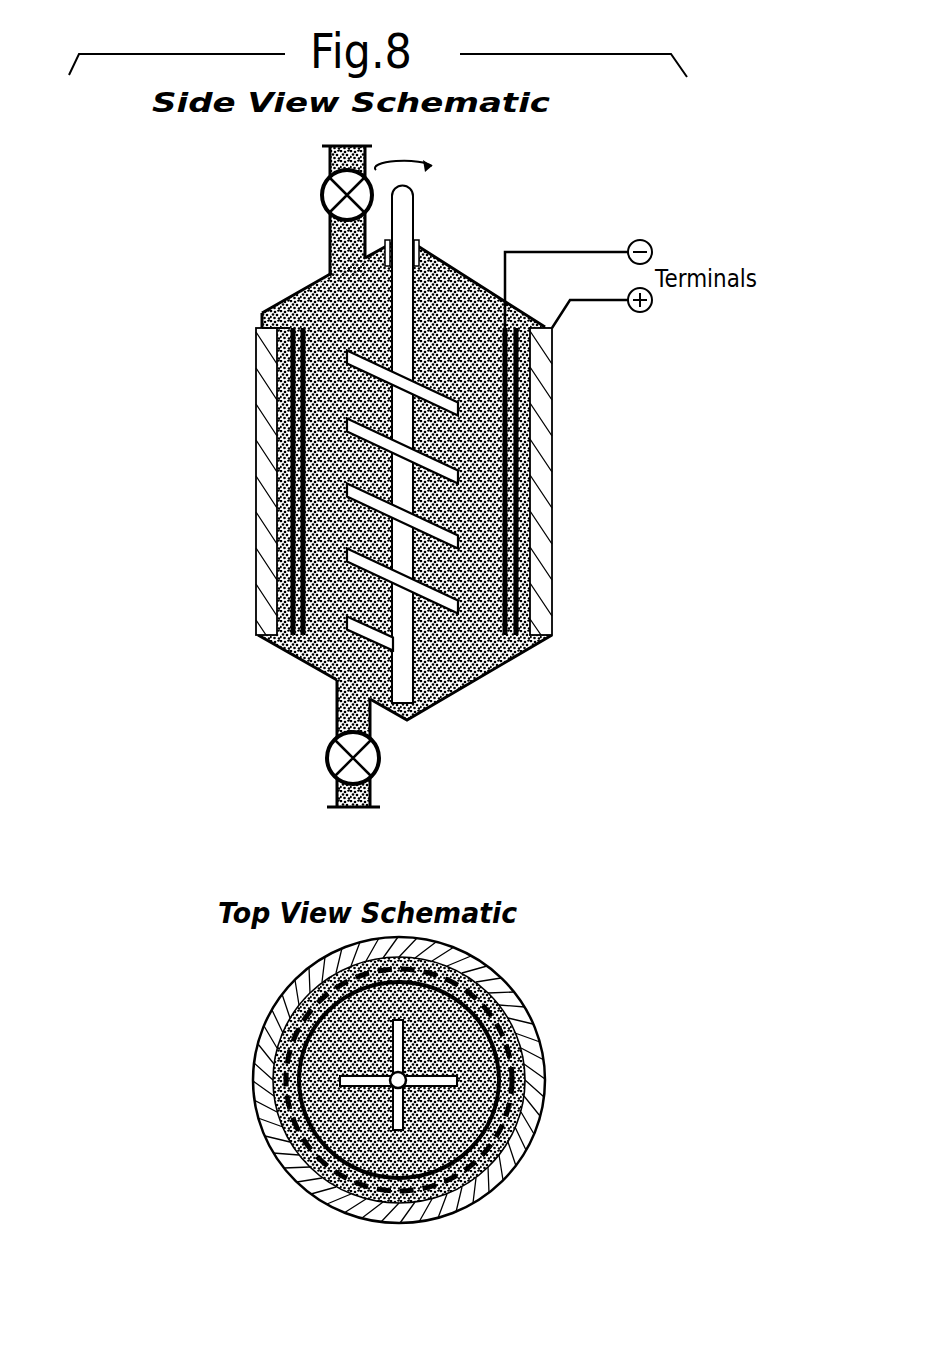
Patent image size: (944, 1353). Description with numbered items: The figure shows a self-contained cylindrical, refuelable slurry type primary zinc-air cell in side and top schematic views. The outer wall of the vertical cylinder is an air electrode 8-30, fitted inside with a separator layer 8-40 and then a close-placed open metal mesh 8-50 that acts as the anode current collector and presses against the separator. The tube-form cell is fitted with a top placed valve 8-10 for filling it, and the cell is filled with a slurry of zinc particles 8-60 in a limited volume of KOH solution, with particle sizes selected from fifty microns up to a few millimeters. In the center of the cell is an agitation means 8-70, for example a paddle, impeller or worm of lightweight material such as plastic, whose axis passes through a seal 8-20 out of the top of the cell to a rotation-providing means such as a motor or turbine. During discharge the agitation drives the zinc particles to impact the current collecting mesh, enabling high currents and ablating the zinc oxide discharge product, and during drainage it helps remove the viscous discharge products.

The top placed valve 8-10 is at (322, 193).
The seal 8-20 is at (422, 242).
The air electrode 8-30 is at (235, 1217).
The separator layer 8-40 is at (560, 985).
The open metal mesh 8-50 is at (577, 1083).
The slurry of zinc particles 8-60 is at (178, 1108).
The agitation means 8-70 is at (262, 1032).